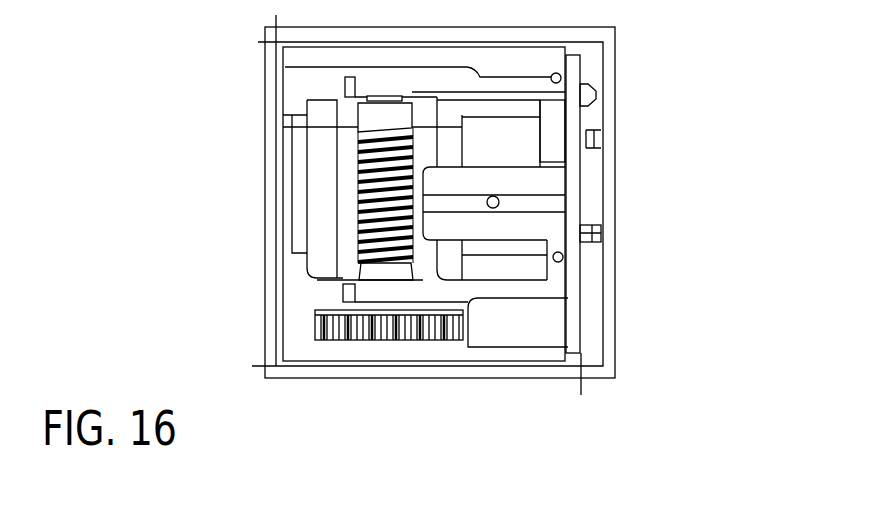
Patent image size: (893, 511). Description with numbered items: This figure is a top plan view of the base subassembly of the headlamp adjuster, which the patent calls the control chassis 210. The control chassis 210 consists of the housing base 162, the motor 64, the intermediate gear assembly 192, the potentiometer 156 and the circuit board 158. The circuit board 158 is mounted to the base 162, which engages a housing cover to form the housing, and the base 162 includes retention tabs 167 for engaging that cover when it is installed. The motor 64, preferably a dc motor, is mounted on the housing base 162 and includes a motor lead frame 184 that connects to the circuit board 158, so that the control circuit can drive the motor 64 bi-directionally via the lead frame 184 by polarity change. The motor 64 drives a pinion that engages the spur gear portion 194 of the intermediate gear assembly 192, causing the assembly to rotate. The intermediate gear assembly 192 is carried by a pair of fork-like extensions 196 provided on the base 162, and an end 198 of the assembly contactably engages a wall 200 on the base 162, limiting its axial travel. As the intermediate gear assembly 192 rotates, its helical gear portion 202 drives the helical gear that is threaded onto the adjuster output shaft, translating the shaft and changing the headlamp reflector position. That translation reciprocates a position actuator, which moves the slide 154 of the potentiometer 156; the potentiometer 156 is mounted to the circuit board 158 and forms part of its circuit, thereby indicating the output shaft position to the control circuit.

The motor 64 is at (327, 174).
The potentiometer slide 154 is at (493, 208).
The potentiometer 156 is at (535, 218).
The circuit board 158 is at (582, 318).
The base 162 is at (616, 188).
The retention tabs 167 is at (590, 125).
The motor lead frame 184 is at (506, 124).
The intermediate gear assembly 192 is at (328, 352).
The spur gear portion 194 is at (421, 322).
The fork-like extensions 196 is at (383, 75).
The end of the intermediate gear assembly 198 is at (377, 322).
The wall 200 is at (375, 320).
The helical gear portion 202 is at (348, 205).
The control chassis 210 is at (686, 375).